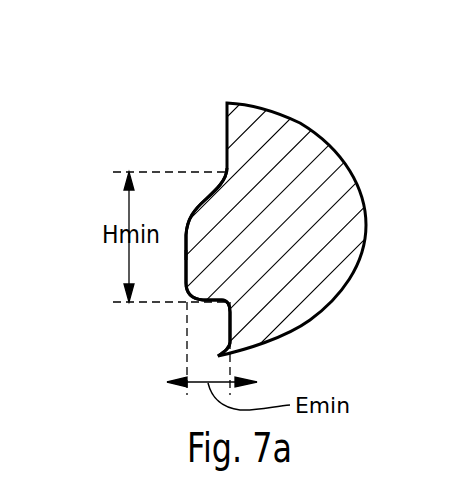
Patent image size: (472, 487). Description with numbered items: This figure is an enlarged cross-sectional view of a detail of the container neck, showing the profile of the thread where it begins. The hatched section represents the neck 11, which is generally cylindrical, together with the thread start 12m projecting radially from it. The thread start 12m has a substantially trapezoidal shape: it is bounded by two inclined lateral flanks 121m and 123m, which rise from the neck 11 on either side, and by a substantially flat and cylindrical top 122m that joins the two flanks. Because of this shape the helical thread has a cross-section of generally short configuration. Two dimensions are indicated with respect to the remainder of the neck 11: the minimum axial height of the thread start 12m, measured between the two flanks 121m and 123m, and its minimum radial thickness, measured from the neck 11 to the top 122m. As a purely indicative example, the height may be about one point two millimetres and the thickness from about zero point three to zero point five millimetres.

The neck 11 is at (303, 133).
The thread start 12m is at (200, 220).
The inclined lateral flank 123m is at (208, 190).
The top 122m is at (186, 256).
The inclined lateral flank 121m is at (212, 302).